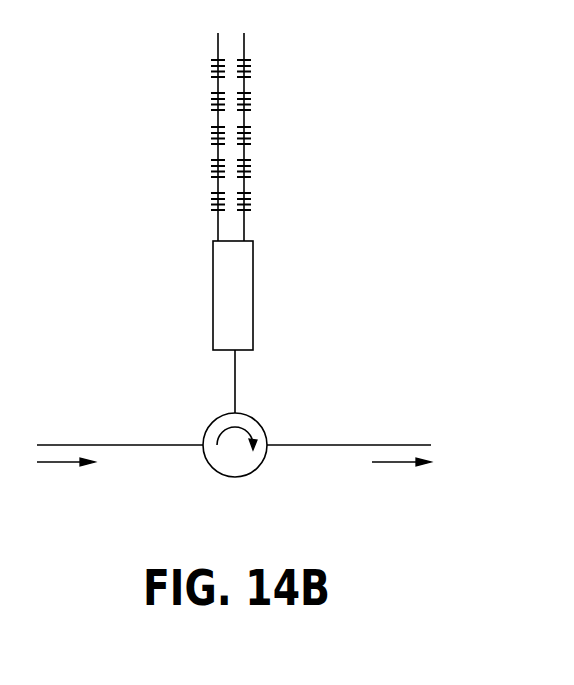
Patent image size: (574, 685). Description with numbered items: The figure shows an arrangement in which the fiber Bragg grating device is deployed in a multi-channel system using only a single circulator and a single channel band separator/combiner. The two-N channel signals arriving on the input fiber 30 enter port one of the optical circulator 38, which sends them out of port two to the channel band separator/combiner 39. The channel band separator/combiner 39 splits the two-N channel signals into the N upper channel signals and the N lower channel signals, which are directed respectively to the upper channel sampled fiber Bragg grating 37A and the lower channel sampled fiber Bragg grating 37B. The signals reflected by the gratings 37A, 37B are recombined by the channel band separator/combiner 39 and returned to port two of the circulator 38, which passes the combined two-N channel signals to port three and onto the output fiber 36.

The input fiber 30 is at (72, 445).
The output fiber 36 is at (370, 445).
The upper channel sampled fiber Bragg grating 37A is at (192, 125).
The lower channel sampled fiber Bragg grating 37B is at (277, 188).
The optical circulator 38 is at (242, 477).
The channel band separator/combiner 39 is at (253, 295).